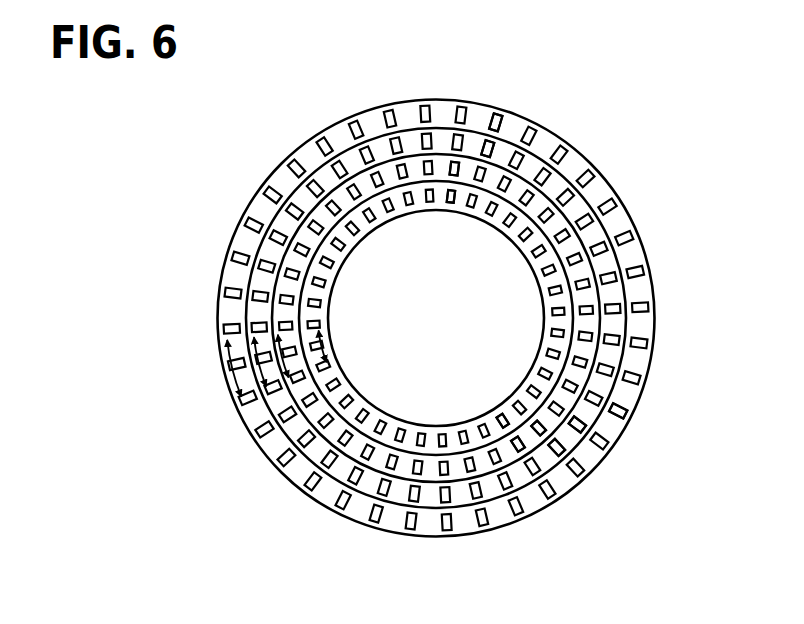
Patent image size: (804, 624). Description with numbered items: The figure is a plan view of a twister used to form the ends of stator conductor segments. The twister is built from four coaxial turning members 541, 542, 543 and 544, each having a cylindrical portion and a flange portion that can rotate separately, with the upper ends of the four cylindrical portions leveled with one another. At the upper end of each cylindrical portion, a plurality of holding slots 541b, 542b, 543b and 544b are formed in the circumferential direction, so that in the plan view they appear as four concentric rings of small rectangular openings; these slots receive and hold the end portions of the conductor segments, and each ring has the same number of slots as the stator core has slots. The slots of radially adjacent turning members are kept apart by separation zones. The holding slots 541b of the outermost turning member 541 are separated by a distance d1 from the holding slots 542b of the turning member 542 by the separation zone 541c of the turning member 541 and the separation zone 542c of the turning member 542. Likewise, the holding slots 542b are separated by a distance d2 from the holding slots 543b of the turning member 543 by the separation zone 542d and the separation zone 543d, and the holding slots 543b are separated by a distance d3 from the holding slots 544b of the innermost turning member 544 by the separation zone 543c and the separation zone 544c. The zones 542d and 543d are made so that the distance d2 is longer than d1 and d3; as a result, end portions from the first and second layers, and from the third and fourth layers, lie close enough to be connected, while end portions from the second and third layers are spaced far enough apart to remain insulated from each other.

The turning member 541 is at (572, 160).
The turning member 542 is at (583, 190).
The turning member 543 is at (568, 245).
The turning member 544 is at (558, 275).
The holding slots 541b is at (497, 126).
The holding slots 542b is at (478, 142).
The holding slots 543b is at (447, 187).
The holding slots 544b is at (440, 188).
The separation zone 541c is at (618, 408).
The separation zone 542c is at (605, 432).
The separation zone 542d is at (595, 458).
The separation zone 543d is at (576, 454).
The separation zone 543c is at (567, 420).
The separation zone 544c is at (530, 423).
The distance d1 is at (482, 478).
The distance d2 is at (428, 455).
The distance d3 is at (391, 424).